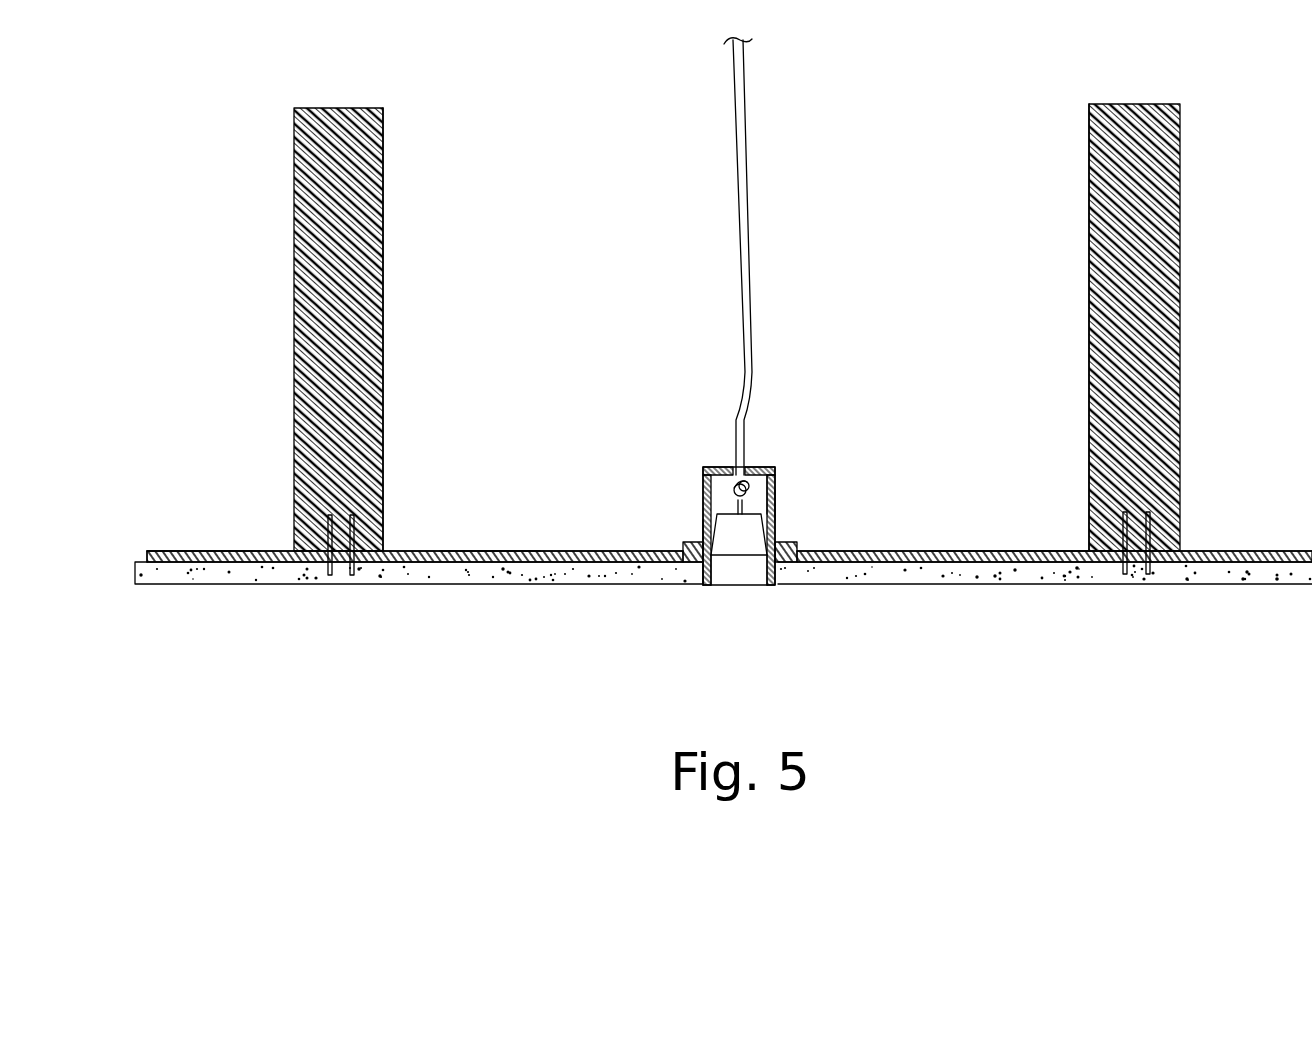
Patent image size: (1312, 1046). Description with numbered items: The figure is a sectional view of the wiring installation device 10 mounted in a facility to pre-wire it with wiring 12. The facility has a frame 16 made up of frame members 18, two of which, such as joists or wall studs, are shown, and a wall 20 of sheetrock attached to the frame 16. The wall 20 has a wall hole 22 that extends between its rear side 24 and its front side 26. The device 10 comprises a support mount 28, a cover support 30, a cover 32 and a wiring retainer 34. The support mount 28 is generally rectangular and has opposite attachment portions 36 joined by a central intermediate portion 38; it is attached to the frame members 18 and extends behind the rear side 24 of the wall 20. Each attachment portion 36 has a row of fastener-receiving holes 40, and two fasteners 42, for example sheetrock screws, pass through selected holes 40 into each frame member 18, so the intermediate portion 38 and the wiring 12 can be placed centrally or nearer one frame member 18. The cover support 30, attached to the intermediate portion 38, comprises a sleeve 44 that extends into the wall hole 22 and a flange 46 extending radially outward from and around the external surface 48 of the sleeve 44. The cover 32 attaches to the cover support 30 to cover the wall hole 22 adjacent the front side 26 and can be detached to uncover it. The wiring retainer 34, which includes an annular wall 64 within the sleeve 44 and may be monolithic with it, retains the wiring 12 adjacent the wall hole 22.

The wiring installation device 10 is at (814, 534).
The wiring 12 is at (753, 222).
The frame 16 is at (386, 182).
The frame members 18 is at (385, 218).
The wall 20 is at (529, 583).
The wall hole 22 is at (778, 574).
The rear side 24 is at (640, 550).
The front side 26 is at (590, 586).
The support mount 28 is at (572, 550).
The cover support 30 is at (701, 484).
The cover 32 is at (732, 589).
The wiring retainer 34 is at (718, 466).
The attachment portions 36 is at (488, 551).
The intermediate portion 38 is at (700, 546).
The fastener-receiving holes 40 is at (195, 551).
The fastener 42 is at (340, 575).
The sleeve 44 is at (778, 488).
The flange 46 is at (698, 574).
The external surface 48 is at (778, 508).
The annular wall 64 is at (758, 467).